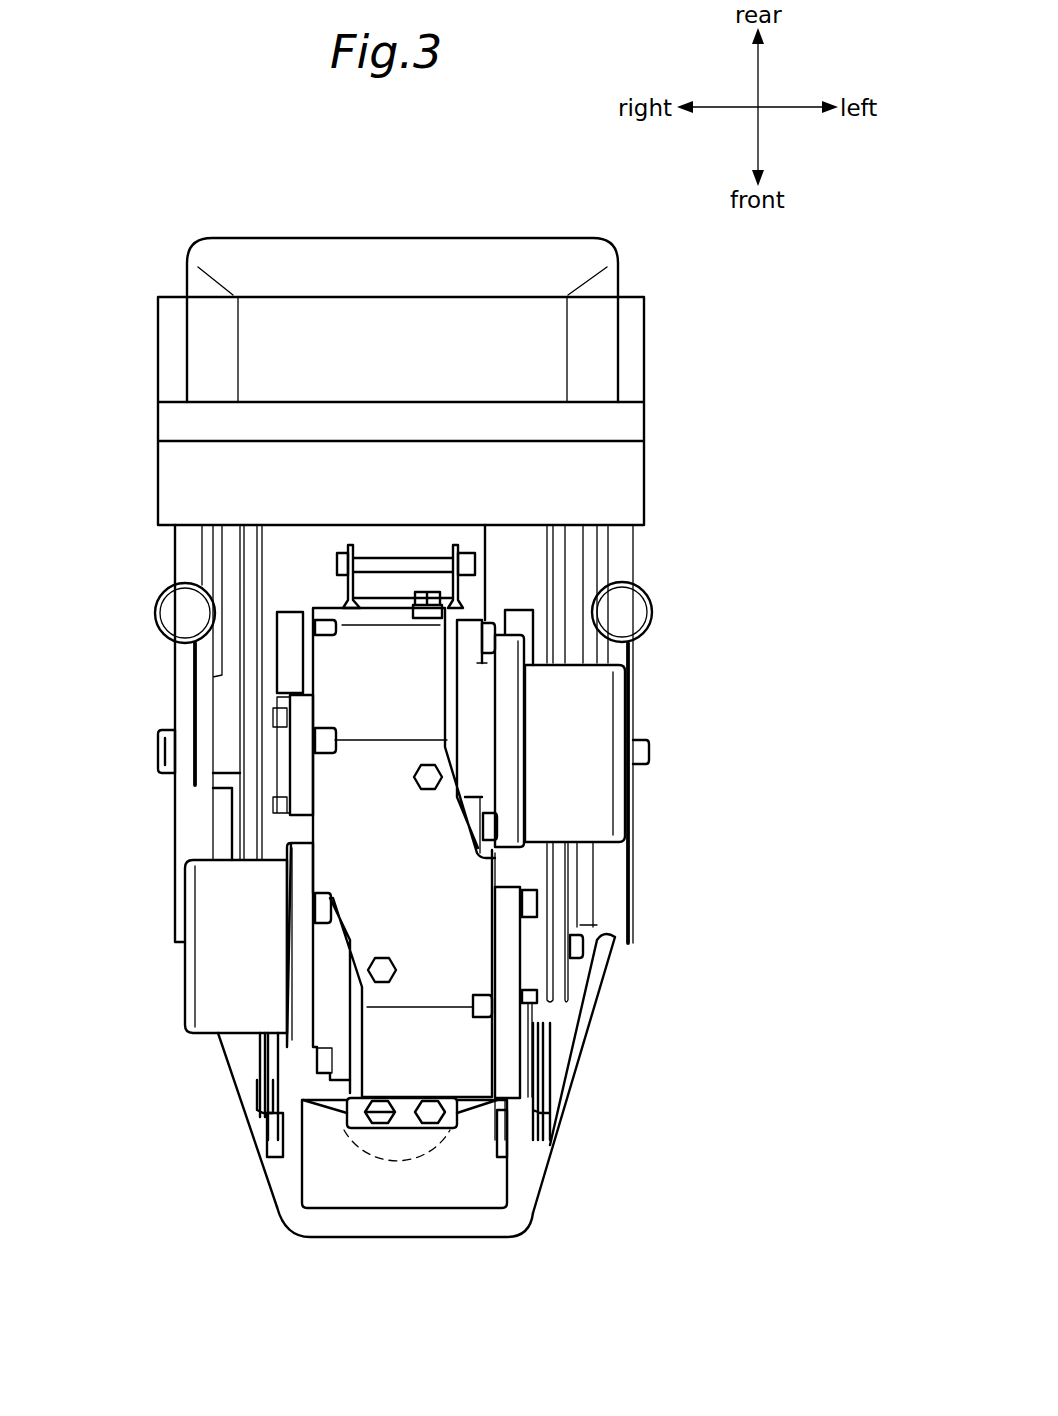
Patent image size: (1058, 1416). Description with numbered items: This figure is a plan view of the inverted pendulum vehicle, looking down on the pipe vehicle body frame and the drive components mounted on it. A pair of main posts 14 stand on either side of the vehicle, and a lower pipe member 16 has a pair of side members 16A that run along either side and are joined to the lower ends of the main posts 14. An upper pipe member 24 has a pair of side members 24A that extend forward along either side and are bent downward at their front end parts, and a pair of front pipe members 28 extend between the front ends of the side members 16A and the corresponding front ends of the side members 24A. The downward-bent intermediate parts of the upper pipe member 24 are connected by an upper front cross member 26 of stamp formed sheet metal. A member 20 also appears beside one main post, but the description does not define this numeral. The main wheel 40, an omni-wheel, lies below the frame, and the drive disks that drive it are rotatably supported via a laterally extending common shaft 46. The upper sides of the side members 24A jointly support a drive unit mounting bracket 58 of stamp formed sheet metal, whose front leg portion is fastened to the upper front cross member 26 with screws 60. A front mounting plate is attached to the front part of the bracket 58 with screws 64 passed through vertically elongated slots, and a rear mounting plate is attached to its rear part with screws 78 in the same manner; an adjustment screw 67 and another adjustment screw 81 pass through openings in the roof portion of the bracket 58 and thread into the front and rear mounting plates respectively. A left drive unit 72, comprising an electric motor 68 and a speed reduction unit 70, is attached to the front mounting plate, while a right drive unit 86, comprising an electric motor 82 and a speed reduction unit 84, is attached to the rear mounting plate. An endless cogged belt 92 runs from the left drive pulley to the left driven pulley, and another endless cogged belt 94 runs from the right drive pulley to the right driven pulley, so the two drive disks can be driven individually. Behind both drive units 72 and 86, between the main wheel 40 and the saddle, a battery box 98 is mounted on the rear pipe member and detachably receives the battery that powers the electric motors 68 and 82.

The battery box 98 is at (635, 480).
The screws 78 is at (427, 598).
The main posts 14 is at (163, 592).
The lower pipe member 16 is at (613, 892).
The side members 16A is at (185, 803).
The support rod 20 is at (190, 674).
The common shaft 46 is at (230, 737).
The endless cogged belt 94 is at (248, 818).
The speed reduction unit 84 is at (508, 695).
The electric motor 82 is at (602, 722).
The right drive unit 86 is at (570, 798).
The endless cogged belt 92 is at (557, 867).
The adjustment screw 81 is at (420, 790).
The adjustment screw 67 is at (395, 960).
The electric motor 68 is at (205, 972).
The left drive unit 72 is at (182, 1015).
The speed reduction unit 70 is at (300, 1015).
The drive unit mounting bracket 58 is at (482, 1057).
The screws 64 is at (390, 1097).
The screws 60 is at (430, 1097).
The front pipe members 28 is at (590, 1005).
The upper pipe member 24 is at (532, 1160).
The side members 24A is at (283, 1093).
The upper front cross member 26 is at (280, 1110).
The main wheel 40 is at (367, 1152).